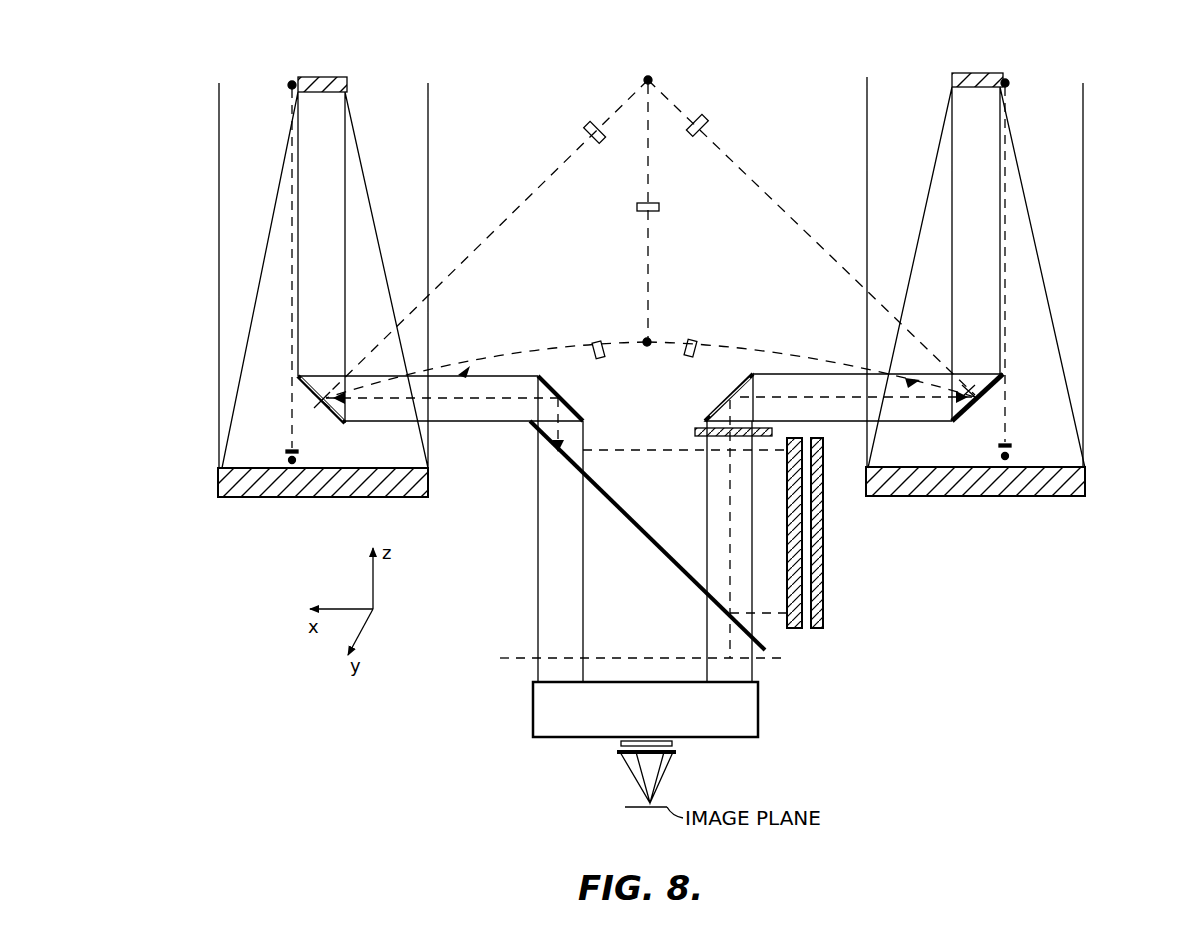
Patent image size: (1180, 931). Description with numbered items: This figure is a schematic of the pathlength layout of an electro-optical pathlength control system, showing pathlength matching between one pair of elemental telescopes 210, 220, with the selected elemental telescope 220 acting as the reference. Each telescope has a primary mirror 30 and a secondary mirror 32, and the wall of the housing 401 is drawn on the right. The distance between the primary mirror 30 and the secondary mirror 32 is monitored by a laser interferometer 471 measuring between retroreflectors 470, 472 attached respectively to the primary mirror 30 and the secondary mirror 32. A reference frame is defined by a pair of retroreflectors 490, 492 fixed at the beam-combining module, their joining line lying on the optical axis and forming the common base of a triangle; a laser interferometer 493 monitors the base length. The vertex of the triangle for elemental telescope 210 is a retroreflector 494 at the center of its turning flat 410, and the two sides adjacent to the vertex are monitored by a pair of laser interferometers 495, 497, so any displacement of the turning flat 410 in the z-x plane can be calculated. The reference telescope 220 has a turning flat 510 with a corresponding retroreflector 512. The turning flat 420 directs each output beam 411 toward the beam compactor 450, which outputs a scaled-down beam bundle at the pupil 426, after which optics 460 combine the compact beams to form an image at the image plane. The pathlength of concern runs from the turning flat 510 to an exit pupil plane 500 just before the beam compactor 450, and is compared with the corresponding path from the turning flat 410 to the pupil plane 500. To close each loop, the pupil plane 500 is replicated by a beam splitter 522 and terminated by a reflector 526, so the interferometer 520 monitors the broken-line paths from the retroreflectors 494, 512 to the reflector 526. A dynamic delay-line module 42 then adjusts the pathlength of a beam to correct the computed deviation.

The elemental telescope 220 is at (198, 260).
The elemental telescope 210 is at (1100, 278).
The housing wall 401 is at (1083, 92).
The secondary mirror 32 is at (985, 73).
The retroreflector 472 is at (1009, 83).
The primary mirror 30 is at (1085, 478).
The turning flat 410 is at (1008, 380).
The retroreflector 494 is at (980, 400).
The laser interferometer 471 is at (1011, 445).
The retroreflector 470 is at (1009, 457).
The output beam 411 is at (852, 372).
The turning flat 420 is at (728, 406).
The dynamic delay-line module 42 is at (697, 432).
The retroreflector 490 is at (645, 346).
The laser interferometer 495 is at (694, 340).
The retroreflector 492 is at (651, 77).
The laser interferometer 497 is at (705, 119).
The laser interferometer 493 is at (659, 207).
The turning flat 510 is at (300, 396).
The retroreflector 512 is at (318, 404).
The beam splitter 522 is at (647, 535).
The exit pupil plane 500 is at (494, 655).
The interferometer 520 is at (795, 628).
The reflector 526 is at (823, 600).
The beam compactor 450 is at (760, 710).
The pupil 426 is at (672, 743).
The optics 460 is at (676, 758).